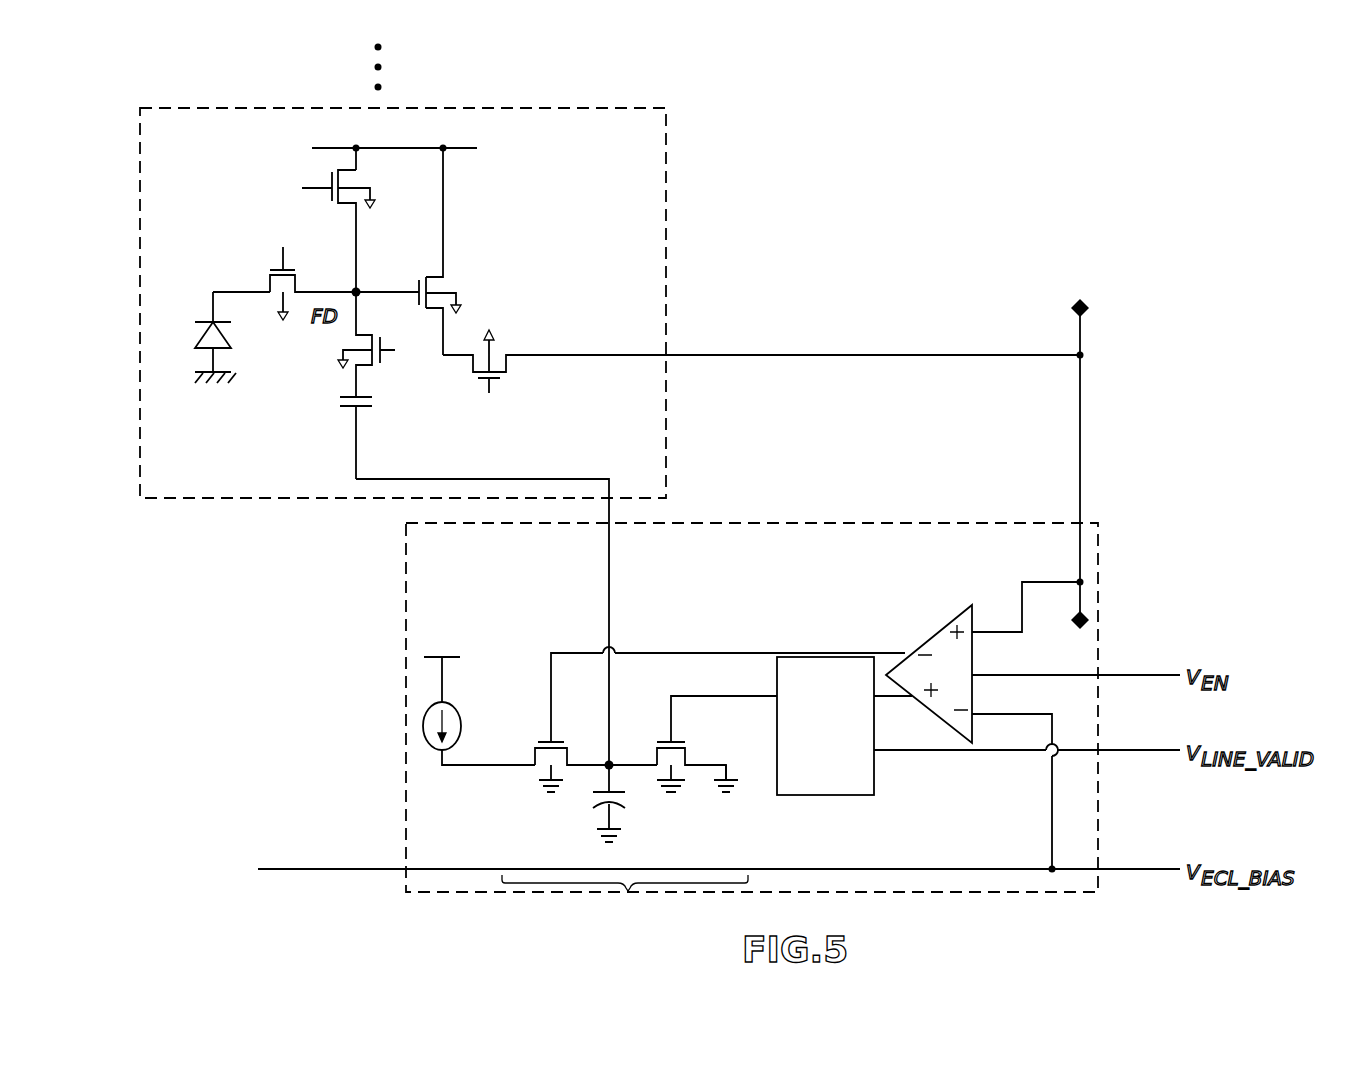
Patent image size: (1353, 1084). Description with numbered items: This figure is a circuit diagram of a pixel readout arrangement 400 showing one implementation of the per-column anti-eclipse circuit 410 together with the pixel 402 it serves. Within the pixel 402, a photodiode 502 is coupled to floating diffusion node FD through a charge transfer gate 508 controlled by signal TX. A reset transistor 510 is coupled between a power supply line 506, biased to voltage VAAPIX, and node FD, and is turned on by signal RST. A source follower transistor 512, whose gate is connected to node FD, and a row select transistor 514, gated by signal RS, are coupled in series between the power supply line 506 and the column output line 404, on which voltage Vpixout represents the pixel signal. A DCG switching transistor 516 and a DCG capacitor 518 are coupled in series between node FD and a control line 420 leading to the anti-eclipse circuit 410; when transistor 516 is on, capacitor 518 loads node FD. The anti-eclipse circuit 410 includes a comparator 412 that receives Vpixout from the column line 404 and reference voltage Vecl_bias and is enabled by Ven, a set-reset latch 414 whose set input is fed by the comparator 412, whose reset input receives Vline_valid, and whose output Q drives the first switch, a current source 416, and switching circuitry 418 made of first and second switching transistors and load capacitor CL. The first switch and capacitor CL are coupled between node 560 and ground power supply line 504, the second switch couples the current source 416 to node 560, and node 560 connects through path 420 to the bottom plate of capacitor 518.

The imaging system / pixel readout circuit 400 is at (1152, 130).
The pixel 402 is at (140, 196).
The column output line 404 is at (1084, 340).
The anti-eclipse circuit 410 is at (1100, 570).
The comparator 412 is at (933, 633).
The latch 414 is at (820, 797).
The current source 416 is at (423, 716).
The switching circuitry 418 is at (628, 891).
The control line 420 is at (609, 510).
The photodiode 502 is at (194, 330).
The ground power supply line 504 is at (228, 368).
The power supply line 506 is at (477, 148).
The charge transfer gate 508 is at (270, 286).
The reset transistor 510 is at (360, 186).
The source follower transistor 512 is at (445, 281).
The row select transistor 514 is at (500, 362).
The DCG switching transistor 516 is at (357, 343).
The DCG capacitor 518 is at (380, 408).
The node 560 is at (617, 752).